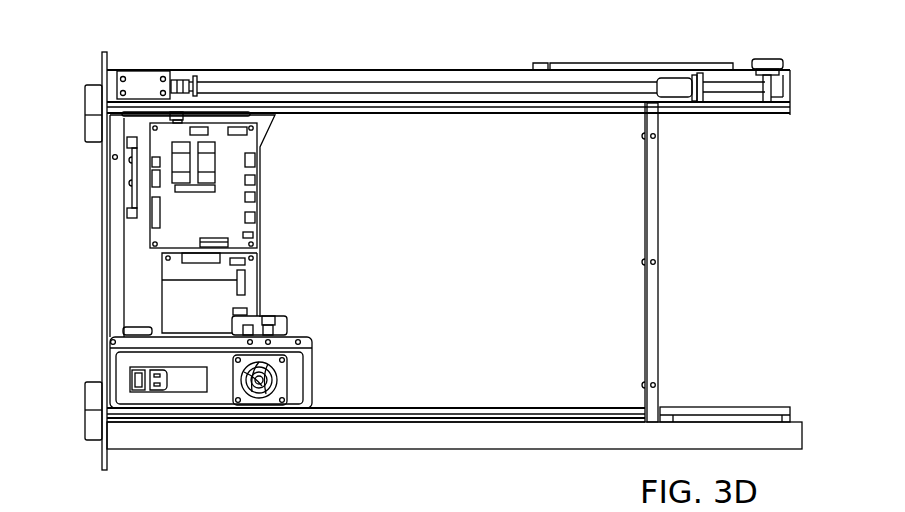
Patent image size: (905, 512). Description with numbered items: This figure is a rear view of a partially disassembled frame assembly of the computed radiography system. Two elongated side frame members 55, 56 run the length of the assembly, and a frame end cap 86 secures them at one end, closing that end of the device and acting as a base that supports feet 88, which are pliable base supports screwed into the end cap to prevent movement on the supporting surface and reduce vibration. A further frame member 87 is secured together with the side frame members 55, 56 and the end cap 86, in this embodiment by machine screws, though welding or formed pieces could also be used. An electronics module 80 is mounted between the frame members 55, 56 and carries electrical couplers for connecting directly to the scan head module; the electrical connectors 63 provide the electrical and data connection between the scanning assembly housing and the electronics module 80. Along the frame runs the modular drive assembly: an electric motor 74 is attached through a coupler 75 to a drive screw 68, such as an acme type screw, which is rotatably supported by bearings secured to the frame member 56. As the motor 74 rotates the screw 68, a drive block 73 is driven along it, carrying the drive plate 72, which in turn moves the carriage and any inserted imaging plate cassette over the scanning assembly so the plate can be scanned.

The frame member 55 is at (320, 69).
The frame member 56 is at (315, 452).
The electrical connectors 63 is at (152, 392).
The drive screw 68 is at (495, 88).
The drive plate 72 is at (652, 63).
The drive block 73 is at (673, 90).
The electric motor 74 is at (141, 80).
The coupler 75 is at (181, 77).
The electronics module 80 is at (264, 218).
The frame end cap 86 is at (102, 282).
The frame member 87 is at (660, 316).
The feet 88 is at (85, 110).